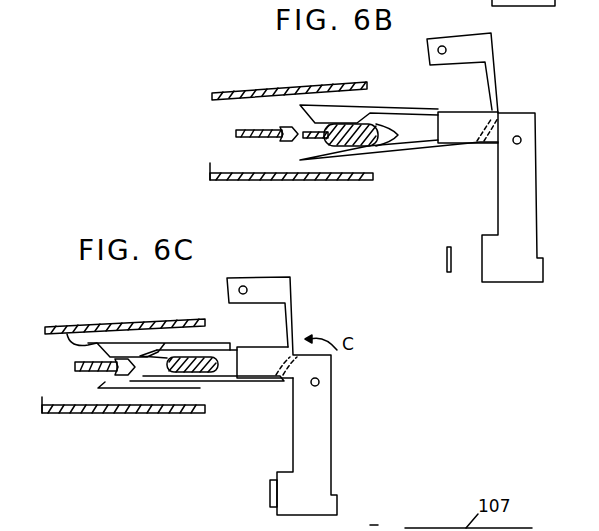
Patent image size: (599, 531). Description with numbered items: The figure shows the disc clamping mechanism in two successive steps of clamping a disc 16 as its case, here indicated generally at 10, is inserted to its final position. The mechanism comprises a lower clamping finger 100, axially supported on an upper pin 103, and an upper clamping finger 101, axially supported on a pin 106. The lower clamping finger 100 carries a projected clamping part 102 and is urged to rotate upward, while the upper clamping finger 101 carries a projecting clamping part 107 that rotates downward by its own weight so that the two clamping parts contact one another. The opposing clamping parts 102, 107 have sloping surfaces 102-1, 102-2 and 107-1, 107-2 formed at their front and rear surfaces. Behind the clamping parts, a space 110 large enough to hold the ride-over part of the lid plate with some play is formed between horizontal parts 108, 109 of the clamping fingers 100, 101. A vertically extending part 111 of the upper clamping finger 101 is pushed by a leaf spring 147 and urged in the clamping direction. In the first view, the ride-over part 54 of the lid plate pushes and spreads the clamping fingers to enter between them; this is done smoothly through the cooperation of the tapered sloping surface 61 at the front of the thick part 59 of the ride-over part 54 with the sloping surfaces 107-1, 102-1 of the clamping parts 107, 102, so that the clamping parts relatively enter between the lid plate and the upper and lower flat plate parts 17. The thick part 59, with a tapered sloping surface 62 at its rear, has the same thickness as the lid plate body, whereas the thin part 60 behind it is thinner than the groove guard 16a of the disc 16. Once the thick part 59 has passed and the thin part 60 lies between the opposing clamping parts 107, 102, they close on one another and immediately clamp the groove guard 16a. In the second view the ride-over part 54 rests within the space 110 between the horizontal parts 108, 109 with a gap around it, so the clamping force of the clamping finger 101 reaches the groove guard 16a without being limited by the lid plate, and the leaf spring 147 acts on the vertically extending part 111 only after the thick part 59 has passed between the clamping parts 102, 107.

In FIG. 6B, the sheet material 10 is at (230, 84).
In FIG. 6C, the sheet material 10 is at (74, 314).
In FIG. 6B, the flat plate part 17 is at (267, 88).
In FIG. 6C, the flat plate part 17 is at (92, 323).
In FIG. 6B, the projecting part 107 is at (334, 110).
In FIG. 6C, the projecting part 107 is at (133, 347).
In FIG. 6C, the sloping surface 107-1 is at (70, 322).
In FIG. 6C, the sloping surface 107-2 is at (172, 352).
In FIG. 6B, the ride-over part 54 is at (369, 120).
In FIG. 6C, the ride-over part 54 is at (198, 412).
In FIG. 6B, the sloping surface 61 is at (400, 133).
In FIG. 6B, the disc 16 is at (246, 128).
In FIG. 6C, the disc 16 is at (80, 363).
In FIG. 6B, the groove guard 16a is at (285, 142).
In FIG. 6C, the groove guard 16a is at (121, 376).
In FIG. 6B, the thick part 59 is at (372, 152).
In FIG. 6C, the thick part 59 is at (215, 343).
In FIG. 6B, the thin part 60 is at (300, 160).
In FIG. 6C, the thin part 60 is at (143, 390).
In FIG. 6C, the sloping surface 62 is at (168, 393).
In FIG. 6B, the clamping part 102 is at (338, 153).
In FIG. 6C, the clamping part 102 is at (118, 378).
In FIG. 6C, the sloping surface 102-1 is at (100, 380).
In FIG. 6C, the sloping surface 102-2 is at (157, 393).
In FIG. 6C, the horizontal part 108 is at (213, 387).
In FIG. 6C, the horizontal part 109 is at (197, 347).
In FIG. 6C, the space 110 is at (225, 373).
In FIG. 6B, the lower clamping finger 100 is at (493, 82).
In FIG. 6C, the lower clamping finger 100 is at (292, 310).
In FIG. 6B, the upper clamping finger 101 is at (452, 110).
In FIG. 6C, the upper clamping finger 101 is at (268, 347).
In FIG. 6B, the upper pin 103 is at (442, 46).
In FIG. 6C, the upper pin 103 is at (246, 286).
In FIG. 6B, the pin 106 is at (521, 140).
In FIG. 6C, the pin 106 is at (319, 382).
In FIG. 6B, the vertically extending part 111 is at (537, 218).
In FIG. 6C, the vertically extending part 111 is at (335, 447).
In FIG. 6B, the leaf spring 147 is at (445, 254).
In FIG. 6C, the leaf spring 147 is at (268, 490).